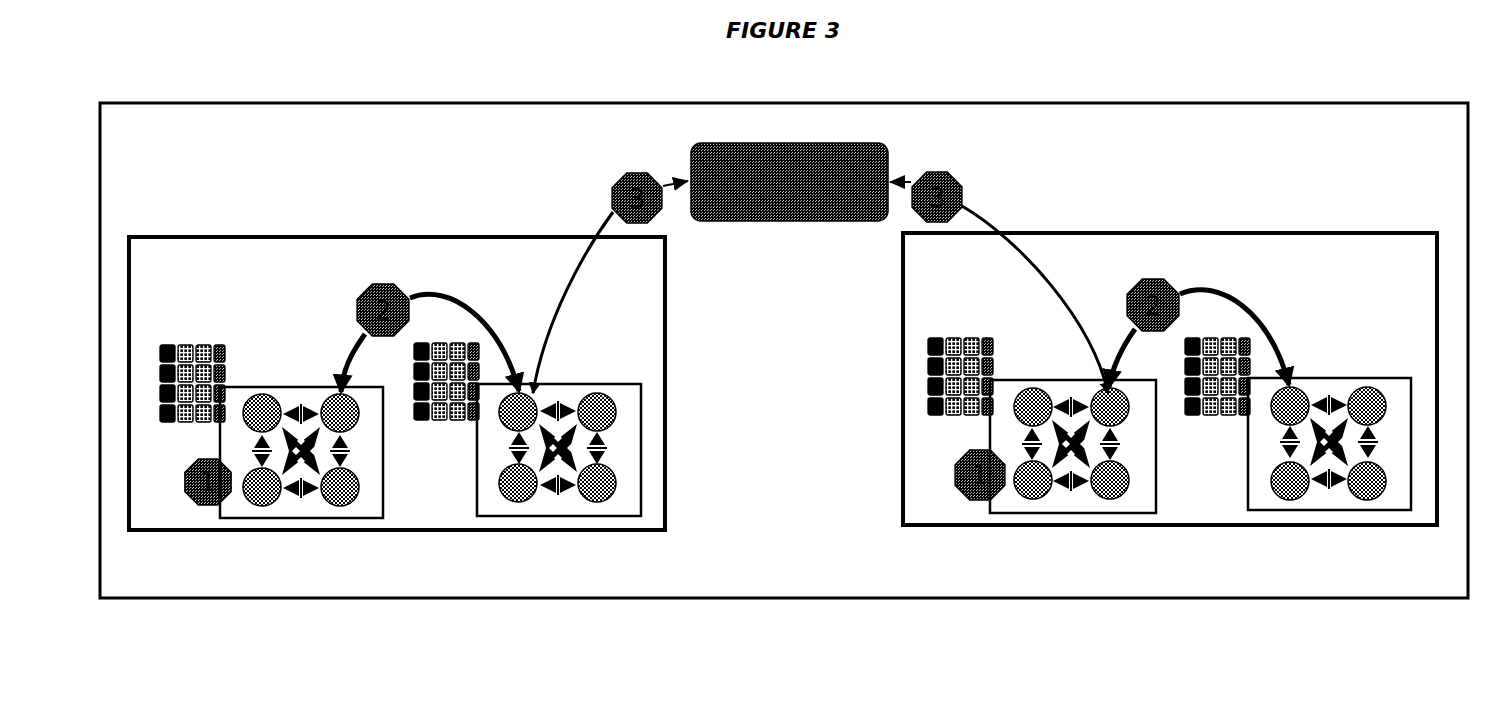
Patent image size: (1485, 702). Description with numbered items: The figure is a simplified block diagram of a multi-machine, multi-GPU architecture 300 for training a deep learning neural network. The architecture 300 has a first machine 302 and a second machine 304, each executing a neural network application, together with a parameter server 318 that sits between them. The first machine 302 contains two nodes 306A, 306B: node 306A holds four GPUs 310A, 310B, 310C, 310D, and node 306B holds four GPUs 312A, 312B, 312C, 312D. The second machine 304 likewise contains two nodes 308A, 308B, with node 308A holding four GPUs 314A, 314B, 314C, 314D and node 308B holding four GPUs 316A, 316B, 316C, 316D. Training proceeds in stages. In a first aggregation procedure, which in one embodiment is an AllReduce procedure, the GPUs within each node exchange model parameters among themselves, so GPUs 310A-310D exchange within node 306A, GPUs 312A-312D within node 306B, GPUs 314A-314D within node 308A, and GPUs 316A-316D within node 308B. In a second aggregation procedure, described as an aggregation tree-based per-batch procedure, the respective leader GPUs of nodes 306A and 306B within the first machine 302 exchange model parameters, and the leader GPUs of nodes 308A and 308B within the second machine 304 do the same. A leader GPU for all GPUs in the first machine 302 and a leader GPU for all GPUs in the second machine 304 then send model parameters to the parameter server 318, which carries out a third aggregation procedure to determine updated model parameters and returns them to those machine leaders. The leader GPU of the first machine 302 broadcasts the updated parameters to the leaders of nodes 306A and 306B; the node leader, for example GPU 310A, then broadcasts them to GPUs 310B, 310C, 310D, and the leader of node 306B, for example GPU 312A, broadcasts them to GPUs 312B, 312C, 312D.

The multi-machine, multi-GPU architecture 300 is at (147, 135).
The first machine 302 is at (262, 237).
The second machine 304 is at (1035, 233).
The node 306A is at (338, 452).
The node 306B is at (521, 450).
The node 308A is at (1108, 446).
The node 308B is at (1292, 444).
The GPU 310A is at (260, 370).
The GPU 310B is at (320, 388).
The GPU 310C is at (278, 520).
The GPU 310D is at (360, 520).
The GPU 312A is at (546, 388).
The GPU 312B is at (604, 370).
The GPU 312C is at (504, 518).
The GPU 312D is at (585, 518).
The GPU 314A is at (1030, 366).
The GPU 314B is at (1134, 384).
The GPU 314C is at (1050, 513).
The GPU 314D is at (1130, 513).
The GPU 316A is at (1317, 380).
The GPU 316B is at (1375, 363).
The GPU 316C is at (1275, 514).
The GPU 316D is at (1356, 514).
The parameter server 318 is at (808, 221).